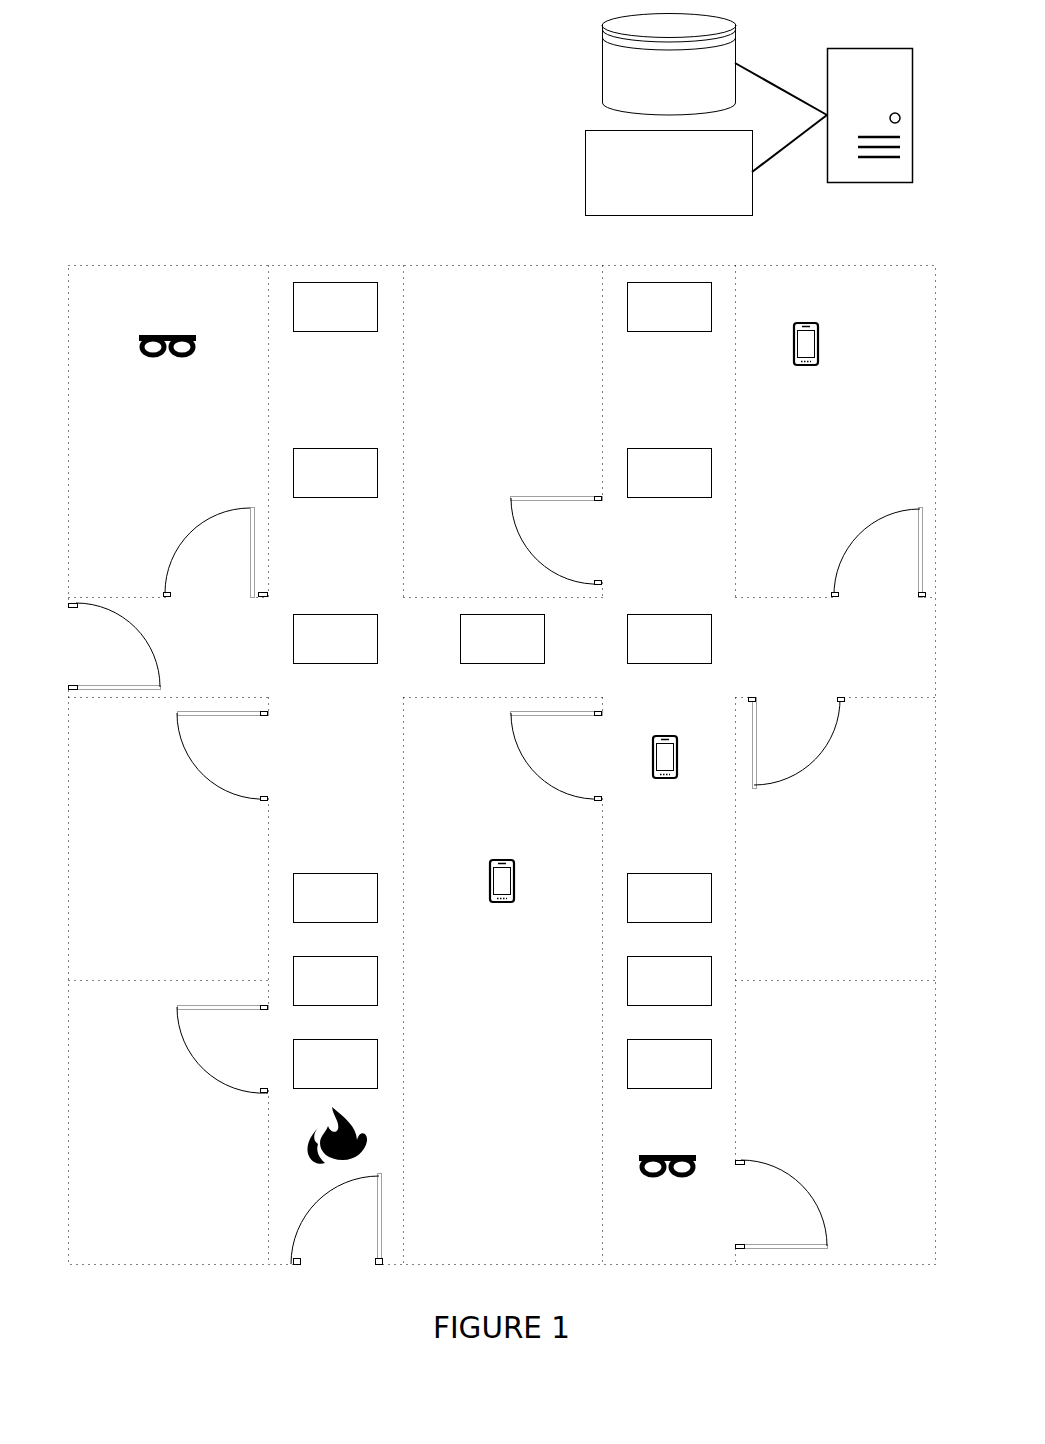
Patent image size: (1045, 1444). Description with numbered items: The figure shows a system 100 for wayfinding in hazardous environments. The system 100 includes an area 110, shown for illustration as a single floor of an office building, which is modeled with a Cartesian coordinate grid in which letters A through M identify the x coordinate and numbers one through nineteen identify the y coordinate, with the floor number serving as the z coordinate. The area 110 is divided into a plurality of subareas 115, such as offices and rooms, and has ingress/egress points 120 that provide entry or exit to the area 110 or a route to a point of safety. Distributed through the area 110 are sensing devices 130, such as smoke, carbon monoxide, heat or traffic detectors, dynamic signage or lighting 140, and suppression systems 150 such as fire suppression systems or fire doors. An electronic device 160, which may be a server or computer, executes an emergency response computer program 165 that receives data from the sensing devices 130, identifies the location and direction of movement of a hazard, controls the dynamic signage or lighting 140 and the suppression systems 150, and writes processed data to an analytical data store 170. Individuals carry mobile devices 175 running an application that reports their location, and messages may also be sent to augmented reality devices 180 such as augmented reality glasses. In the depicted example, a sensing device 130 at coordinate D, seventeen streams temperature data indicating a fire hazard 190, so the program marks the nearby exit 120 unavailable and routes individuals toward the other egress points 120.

The system 100 is at (893, 1305).
The area 110 is at (390, 256).
The subareas 115 is at (153, 440).
The ingress/egress points 120 is at (226, 934).
The sensing device 130 is at (503, 686).
The dynamic signage or lighting 140 is at (503, 769).
The suppression systems 150 is at (503, 727).
The electronic device 160 is at (833, 140).
The emergency response computer program 165 is at (707, 165).
The analytical data store 170 is at (669, 65).
The mobile devices 175 is at (654, 626).
The augmented reality devices 180 is at (417, 772).
The fire hazard 190 is at (338, 1146).